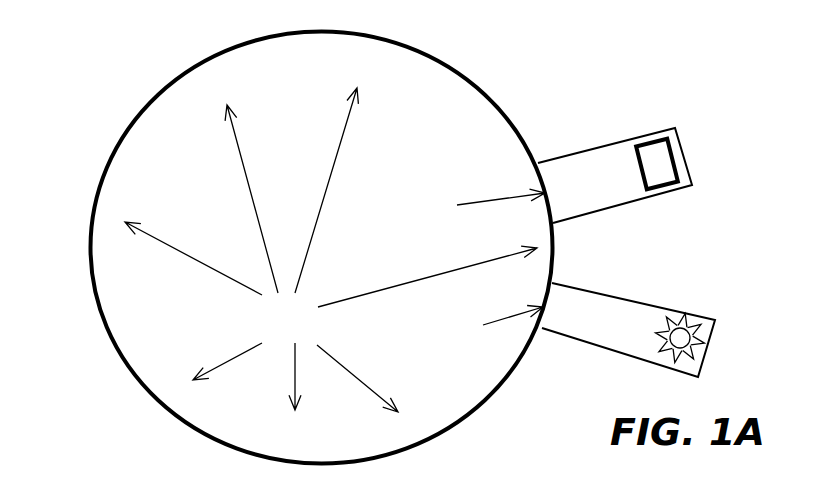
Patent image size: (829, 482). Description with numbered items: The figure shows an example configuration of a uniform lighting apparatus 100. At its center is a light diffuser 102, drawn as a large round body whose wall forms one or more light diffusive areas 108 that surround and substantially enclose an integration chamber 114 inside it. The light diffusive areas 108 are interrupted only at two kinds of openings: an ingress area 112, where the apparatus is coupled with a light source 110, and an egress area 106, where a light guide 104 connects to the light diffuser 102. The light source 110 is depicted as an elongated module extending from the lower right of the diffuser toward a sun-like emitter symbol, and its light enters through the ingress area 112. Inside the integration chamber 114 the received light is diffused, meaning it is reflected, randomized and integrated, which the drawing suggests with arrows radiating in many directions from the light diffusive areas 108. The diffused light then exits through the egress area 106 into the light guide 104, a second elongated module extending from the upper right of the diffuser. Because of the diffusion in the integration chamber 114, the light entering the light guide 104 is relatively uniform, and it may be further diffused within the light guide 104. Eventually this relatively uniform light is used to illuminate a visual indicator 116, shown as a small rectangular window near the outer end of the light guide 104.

The uniform lighting apparatus 100 is at (562, 68).
The light diffuser 102 is at (100, 312).
The light guide 104 is at (688, 155).
The egress area 106 is at (479, 204).
The light diffusive area 108 is at (331, 250).
The light source 110 is at (708, 360).
The ingress area 112 is at (492, 323).
The integration chamber 114 is at (307, 80).
The visual indicator 116 is at (656, 150).